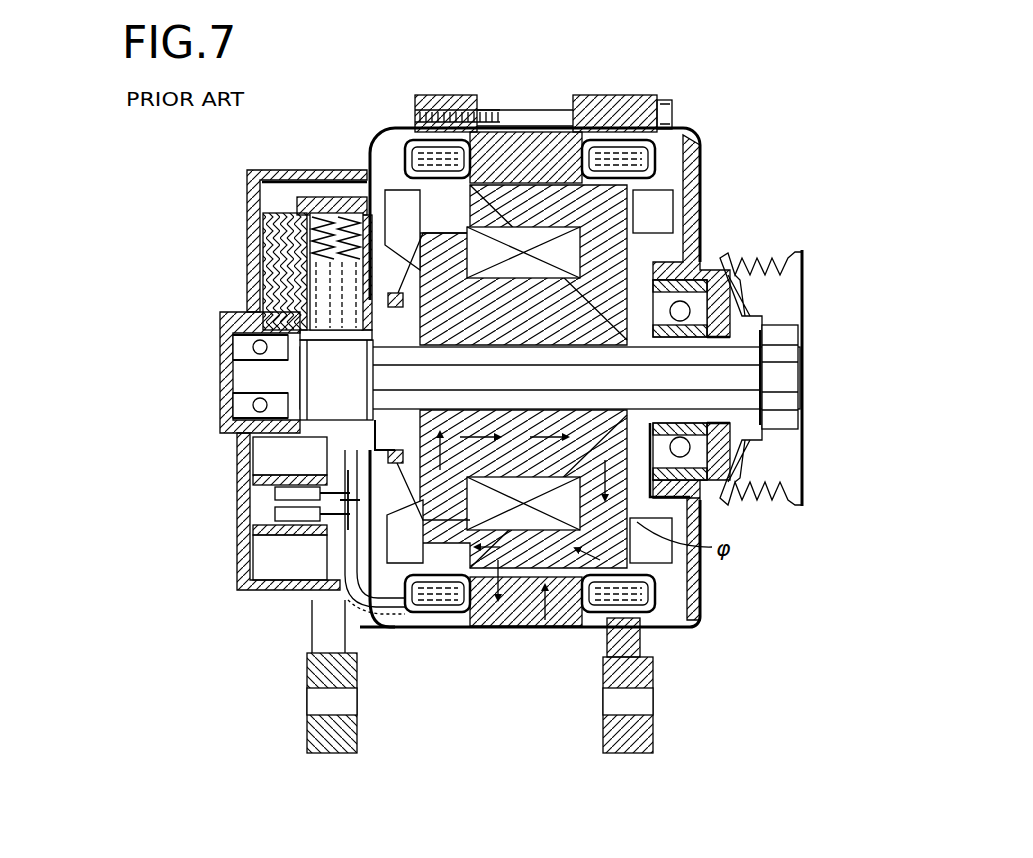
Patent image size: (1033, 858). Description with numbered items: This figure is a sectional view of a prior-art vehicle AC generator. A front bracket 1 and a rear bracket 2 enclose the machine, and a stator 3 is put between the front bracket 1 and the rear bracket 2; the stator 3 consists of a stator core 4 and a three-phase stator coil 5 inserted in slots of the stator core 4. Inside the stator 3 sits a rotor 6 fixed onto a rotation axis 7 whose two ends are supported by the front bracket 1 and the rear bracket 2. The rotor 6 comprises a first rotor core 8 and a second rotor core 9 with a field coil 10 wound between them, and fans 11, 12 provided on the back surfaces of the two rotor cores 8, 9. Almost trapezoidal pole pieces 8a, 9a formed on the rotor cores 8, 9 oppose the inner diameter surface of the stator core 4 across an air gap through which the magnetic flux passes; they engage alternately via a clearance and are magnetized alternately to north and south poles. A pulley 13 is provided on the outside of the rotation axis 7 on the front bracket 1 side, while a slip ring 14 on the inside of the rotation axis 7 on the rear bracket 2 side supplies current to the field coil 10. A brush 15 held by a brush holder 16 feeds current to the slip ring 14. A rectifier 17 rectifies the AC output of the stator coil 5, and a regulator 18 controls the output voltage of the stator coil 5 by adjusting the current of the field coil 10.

The front bracket 1 is at (698, 243).
The rear bracket 2 is at (233, 323).
The stator 3 is at (495, 623).
The stator core 4 is at (512, 146).
The stator coil 5 is at (420, 602).
The rotor 6 is at (657, 163).
The rotation axis 7 is at (740, 372).
The first rotor core 8 is at (565, 205).
The pole pieces 8a is at (545, 550).
The second rotor core 9 is at (437, 196).
The pole pieces 9a is at (448, 555).
The field coil 10 is at (525, 240).
The fan 11 is at (663, 217).
The fan 12 is at (393, 200).
The pulley 13 is at (790, 500).
The slip ring 14 is at (322, 375).
The brush 15 is at (320, 270).
The brush holder 16 is at (345, 200).
The rectifier 17 is at (275, 567).
The regulator 18 is at (295, 217).